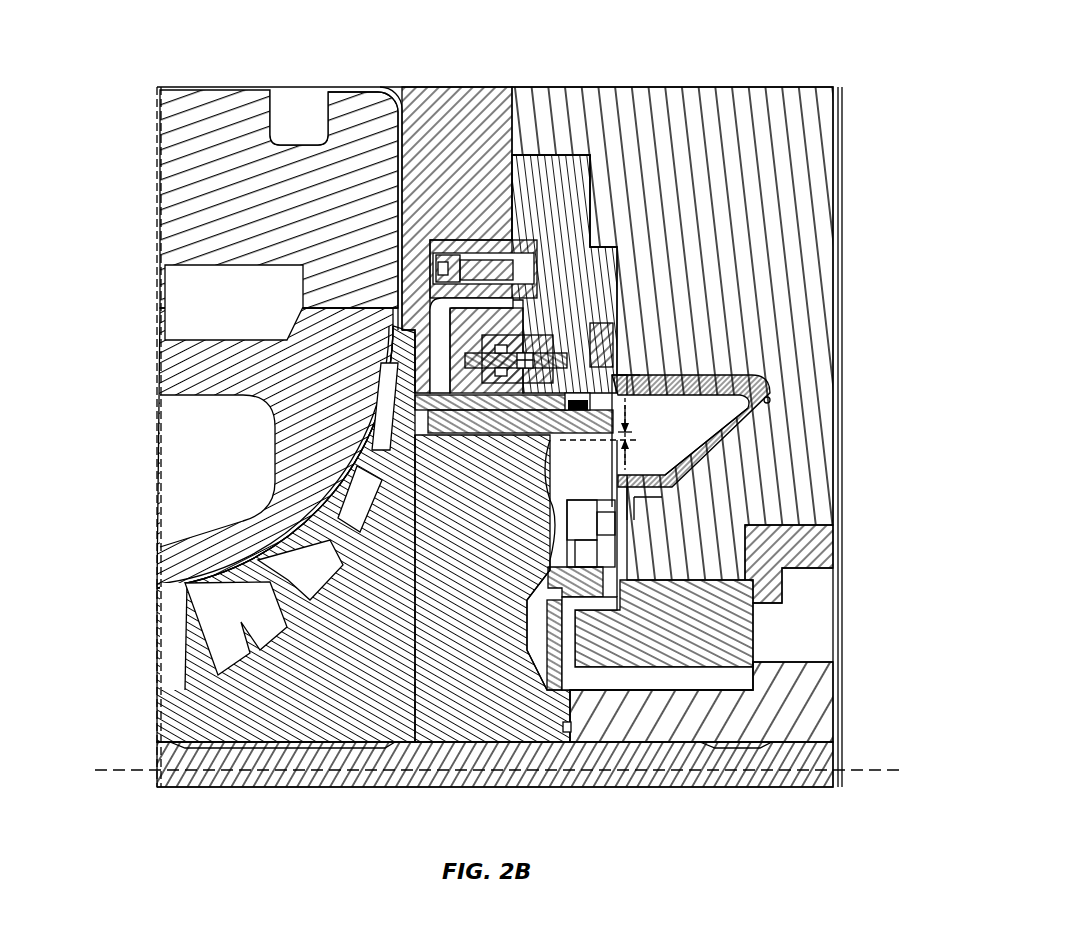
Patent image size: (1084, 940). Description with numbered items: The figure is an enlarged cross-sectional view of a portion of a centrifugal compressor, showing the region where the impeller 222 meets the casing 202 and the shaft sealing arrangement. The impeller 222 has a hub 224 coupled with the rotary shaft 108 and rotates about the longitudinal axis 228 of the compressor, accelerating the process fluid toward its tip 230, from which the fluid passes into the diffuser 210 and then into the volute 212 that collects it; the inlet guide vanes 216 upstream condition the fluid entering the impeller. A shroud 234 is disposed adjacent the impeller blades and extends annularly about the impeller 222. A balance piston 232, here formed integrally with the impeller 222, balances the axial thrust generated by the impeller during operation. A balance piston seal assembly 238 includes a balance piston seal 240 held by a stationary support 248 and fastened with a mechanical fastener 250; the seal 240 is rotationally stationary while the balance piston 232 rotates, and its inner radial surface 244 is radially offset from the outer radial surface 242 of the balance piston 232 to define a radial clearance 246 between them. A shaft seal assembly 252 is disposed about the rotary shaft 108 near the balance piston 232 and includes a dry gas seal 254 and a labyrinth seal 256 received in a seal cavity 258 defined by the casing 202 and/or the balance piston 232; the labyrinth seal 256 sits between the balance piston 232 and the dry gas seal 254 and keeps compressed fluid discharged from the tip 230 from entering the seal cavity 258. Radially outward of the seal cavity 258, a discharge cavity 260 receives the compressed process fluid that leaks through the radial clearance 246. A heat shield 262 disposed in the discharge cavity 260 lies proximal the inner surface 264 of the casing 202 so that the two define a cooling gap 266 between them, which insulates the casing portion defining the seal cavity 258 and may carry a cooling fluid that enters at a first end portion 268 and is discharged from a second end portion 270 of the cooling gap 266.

The rotary shaft 108 is at (580, 733).
The casing 202 is at (735, 86).
The diffuser 210 is at (393, 187).
The volute 212 is at (300, 105).
The inlet guide vanes 216 is at (282, 583).
The impeller 222 is at (286, 534).
The hub 224 is at (275, 730).
The longitudinal axis 228 is at (490, 803).
The tip 230 is at (403, 333).
The balance piston 232 is at (492, 588).
The shroud 234 is at (257, 340).
The balance piston seal assembly 238 is at (452, 240).
The balance piston seal 240 is at (495, 320).
The outer radial surface 242 is at (452, 436).
The inner radial surface 244 is at (525, 436).
The radial clearance 246 is at (623, 408).
The stationary support 248 is at (575, 170).
The mechanical fastener 250 is at (500, 270).
The shaft seal assembly 252 is at (697, 565).
The dry gas seal 254 is at (664, 623).
The labyrinth seal 256 is at (565, 588).
The seal cavity 258 is at (527, 655).
The discharge cavity 260 is at (590, 518).
The heat shield 262 is at (722, 385).
The inner surface 264 is at (767, 400).
The cooling gap 266 is at (700, 467).
The first end portion 268 is at (655, 505).
The second end portion 270 is at (627, 372).